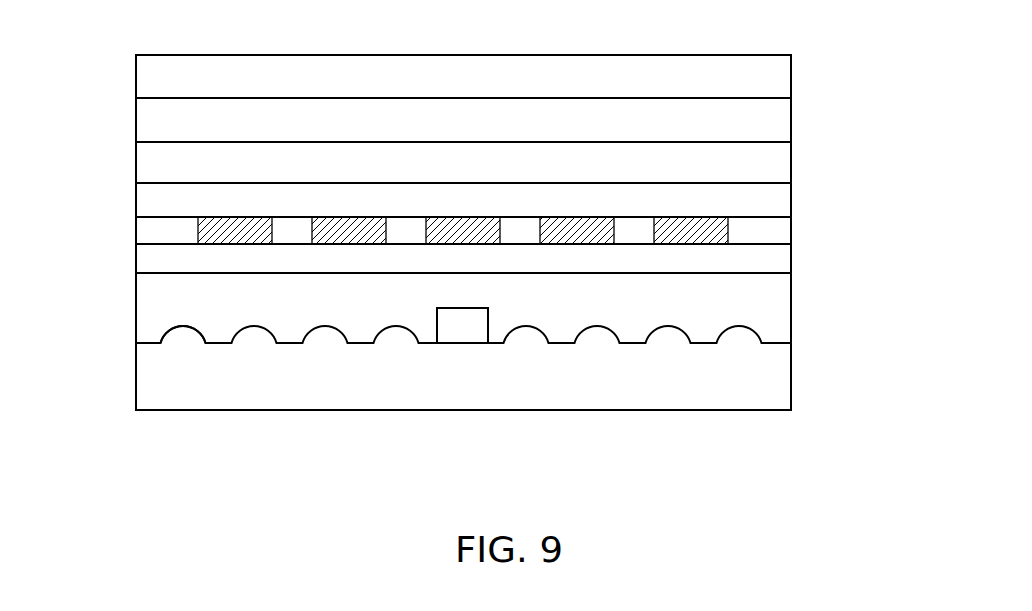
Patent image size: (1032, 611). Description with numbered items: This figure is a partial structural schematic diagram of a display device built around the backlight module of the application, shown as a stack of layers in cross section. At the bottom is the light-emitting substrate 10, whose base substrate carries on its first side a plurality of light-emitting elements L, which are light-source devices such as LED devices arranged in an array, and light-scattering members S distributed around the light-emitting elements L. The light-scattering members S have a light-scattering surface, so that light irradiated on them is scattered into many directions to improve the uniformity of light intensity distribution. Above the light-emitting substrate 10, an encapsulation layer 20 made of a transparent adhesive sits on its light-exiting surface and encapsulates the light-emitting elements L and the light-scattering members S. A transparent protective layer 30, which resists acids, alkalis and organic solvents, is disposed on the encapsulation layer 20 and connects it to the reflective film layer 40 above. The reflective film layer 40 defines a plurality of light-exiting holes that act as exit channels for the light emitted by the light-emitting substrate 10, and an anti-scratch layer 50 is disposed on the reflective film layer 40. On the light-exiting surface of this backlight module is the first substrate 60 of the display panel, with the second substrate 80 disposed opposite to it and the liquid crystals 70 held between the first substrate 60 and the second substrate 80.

The light-emitting substrate 10 is at (791, 375).
The encapsulation layer 20 is at (791, 306).
The protective layer 30 is at (791, 253).
The reflective film layer 40 is at (791, 223).
The anti-scratch layer 50 is at (791, 193).
The first substrate 60 is at (791, 162).
The liquid crystals 70 is at (791, 118).
The second substrate 80 is at (791, 75).
The light-scattering members S is at (181, 326).
The light-emitting elements L is at (463, 345).